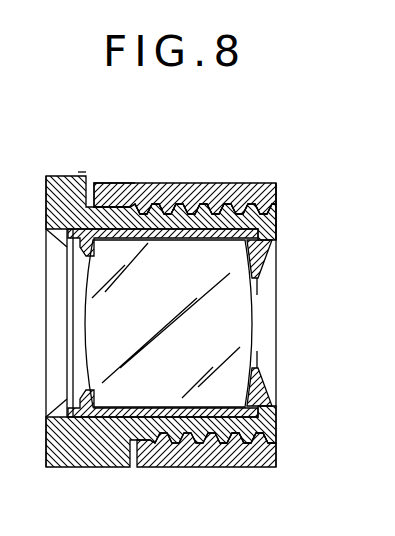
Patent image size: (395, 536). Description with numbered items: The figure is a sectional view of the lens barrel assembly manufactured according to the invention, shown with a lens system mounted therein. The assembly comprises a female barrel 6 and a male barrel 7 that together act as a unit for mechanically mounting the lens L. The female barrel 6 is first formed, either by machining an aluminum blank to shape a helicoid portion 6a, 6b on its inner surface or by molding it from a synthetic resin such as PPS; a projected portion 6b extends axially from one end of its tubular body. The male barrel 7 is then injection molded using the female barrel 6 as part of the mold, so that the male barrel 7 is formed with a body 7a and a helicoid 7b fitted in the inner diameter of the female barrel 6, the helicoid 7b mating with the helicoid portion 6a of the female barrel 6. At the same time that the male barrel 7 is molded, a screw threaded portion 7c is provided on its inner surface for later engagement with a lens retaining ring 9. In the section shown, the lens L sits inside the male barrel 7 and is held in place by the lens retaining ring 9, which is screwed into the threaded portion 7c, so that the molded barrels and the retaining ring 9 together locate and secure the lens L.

The female barrel 6 is at (226, 193).
The helicoid portion 6a is at (182, 205).
The helicoid portion 6b is at (113, 190).
The male barrel 7 is at (58, 175).
The body 7a is at (148, 442).
The helicoid 7b is at (253, 427).
The screw threaded portion 7c is at (278, 210).
The lens retaining ring 9 is at (273, 254).
The lens L is at (198, 396).